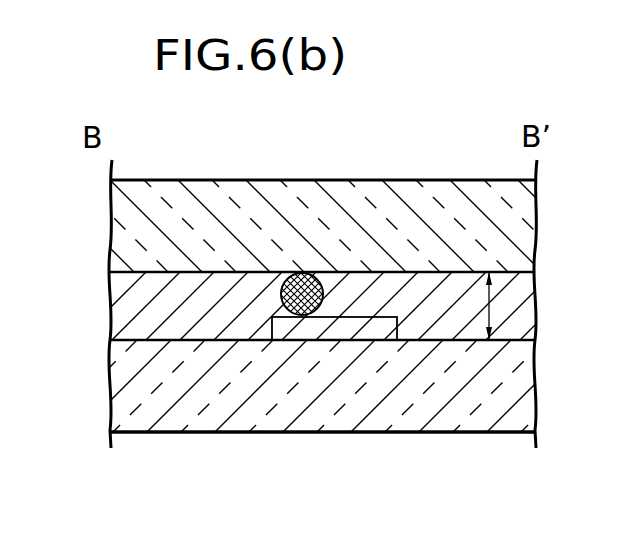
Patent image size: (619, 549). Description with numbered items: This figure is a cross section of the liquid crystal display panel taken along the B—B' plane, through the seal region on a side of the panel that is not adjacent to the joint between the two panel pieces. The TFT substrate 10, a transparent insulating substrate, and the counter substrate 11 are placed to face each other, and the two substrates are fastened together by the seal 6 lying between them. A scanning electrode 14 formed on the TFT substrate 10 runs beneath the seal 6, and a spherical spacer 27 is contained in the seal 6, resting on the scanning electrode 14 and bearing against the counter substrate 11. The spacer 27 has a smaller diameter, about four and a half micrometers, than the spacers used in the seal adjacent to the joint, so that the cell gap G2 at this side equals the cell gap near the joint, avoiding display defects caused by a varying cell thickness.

The counter substrate 11 is at (125, 223).
The TFT substrate 10 is at (140, 389).
The seal 6 is at (203, 272).
The spacer 27 is at (306, 272).
The scanning electrode 14 is at (372, 330).
The cell gap G2 is at (492, 303).